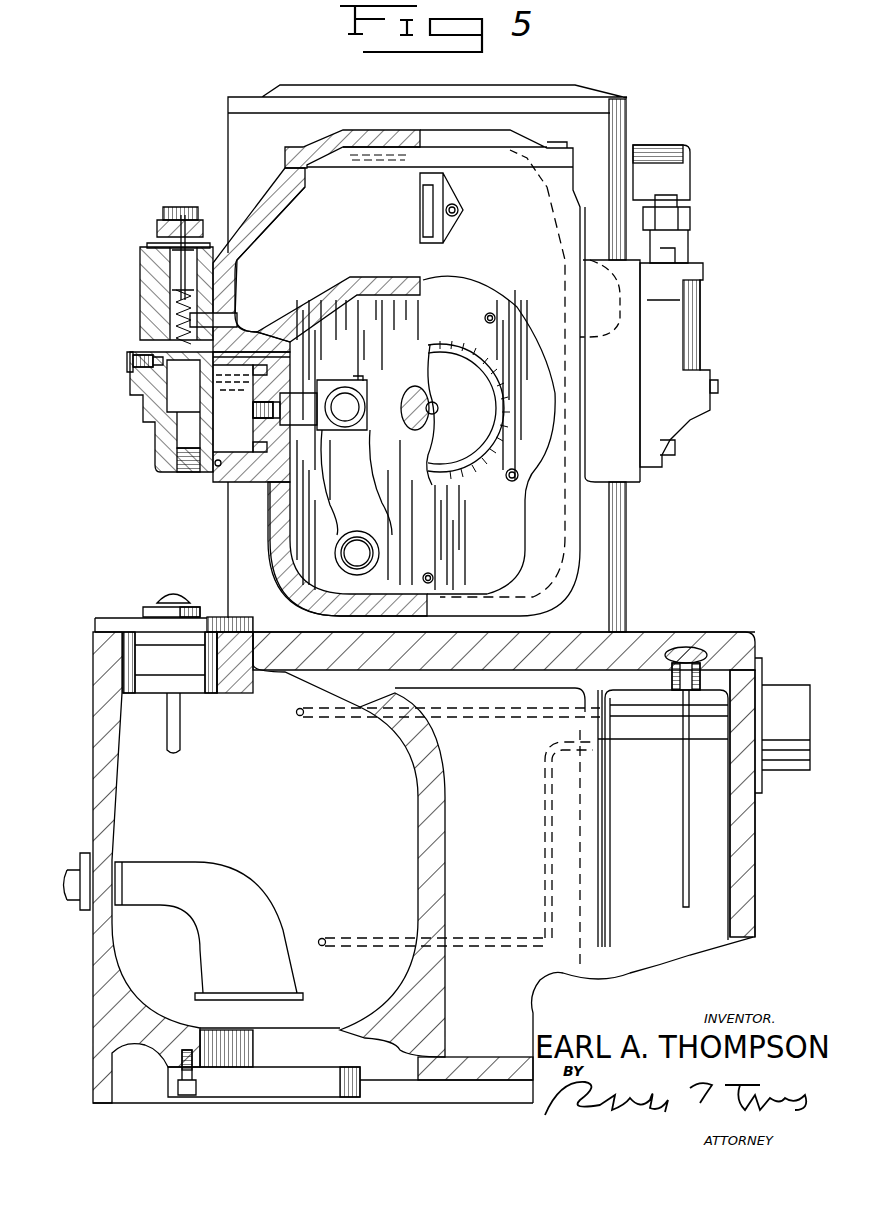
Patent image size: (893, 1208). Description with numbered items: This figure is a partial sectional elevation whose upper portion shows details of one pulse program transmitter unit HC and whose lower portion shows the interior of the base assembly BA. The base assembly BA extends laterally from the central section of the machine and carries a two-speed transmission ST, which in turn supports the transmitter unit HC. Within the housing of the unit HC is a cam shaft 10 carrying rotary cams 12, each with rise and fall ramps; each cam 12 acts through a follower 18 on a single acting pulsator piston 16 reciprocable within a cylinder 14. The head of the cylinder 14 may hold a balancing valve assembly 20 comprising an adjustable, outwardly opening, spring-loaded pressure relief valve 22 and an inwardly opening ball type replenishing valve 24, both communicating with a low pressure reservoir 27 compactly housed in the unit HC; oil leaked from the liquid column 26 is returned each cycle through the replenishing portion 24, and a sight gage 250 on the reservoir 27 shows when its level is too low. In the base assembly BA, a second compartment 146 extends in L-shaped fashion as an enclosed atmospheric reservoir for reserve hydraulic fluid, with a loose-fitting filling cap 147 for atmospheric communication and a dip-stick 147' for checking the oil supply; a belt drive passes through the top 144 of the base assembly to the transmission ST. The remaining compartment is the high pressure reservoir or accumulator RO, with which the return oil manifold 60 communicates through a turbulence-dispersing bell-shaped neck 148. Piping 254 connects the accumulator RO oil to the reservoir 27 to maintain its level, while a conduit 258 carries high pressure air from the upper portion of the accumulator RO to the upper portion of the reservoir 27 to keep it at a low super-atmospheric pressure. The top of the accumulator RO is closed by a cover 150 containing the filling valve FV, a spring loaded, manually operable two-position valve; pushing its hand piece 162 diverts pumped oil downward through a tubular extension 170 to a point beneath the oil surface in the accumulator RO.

The pulse program transmitter unit HC is at (250, 208).
The reservoir 27 is at (322, 205).
The sight gage 250 is at (432, 200).
The two-speed transmission ST is at (622, 127).
The balancing valve assembly 20 is at (150, 319).
The cam shaft 10 is at (413, 392).
The rotary cam 12 is at (383, 383).
The pulsator piston 16 is at (287, 383).
The pressure relief valve 22 is at (233, 384).
The replenishing valve 24 is at (180, 362).
The liquid column 26 is at (185, 468).
The cylinder 14 is at (243, 440).
The follower 18 is at (342, 502).
The filling valve FV is at (141, 615).
The hand piece 162 is at (173, 601).
The cover 150 is at (107, 622).
The tubular extension 170 is at (180, 747).
The high pressure reservoir RO is at (308, 811).
The return oil manifold 60 is at (68, 858).
The bell-shaped neck 148 is at (260, 933).
The top of the base assembly 144 is at (532, 678).
The conduit 258 is at (537, 717).
The piping 254 is at (543, 805).
The filling cap 147 is at (686, 644).
The dip-stick 147' is at (662, 798).
The second compartment 146 is at (660, 871).
The base assembly BA is at (757, 651).